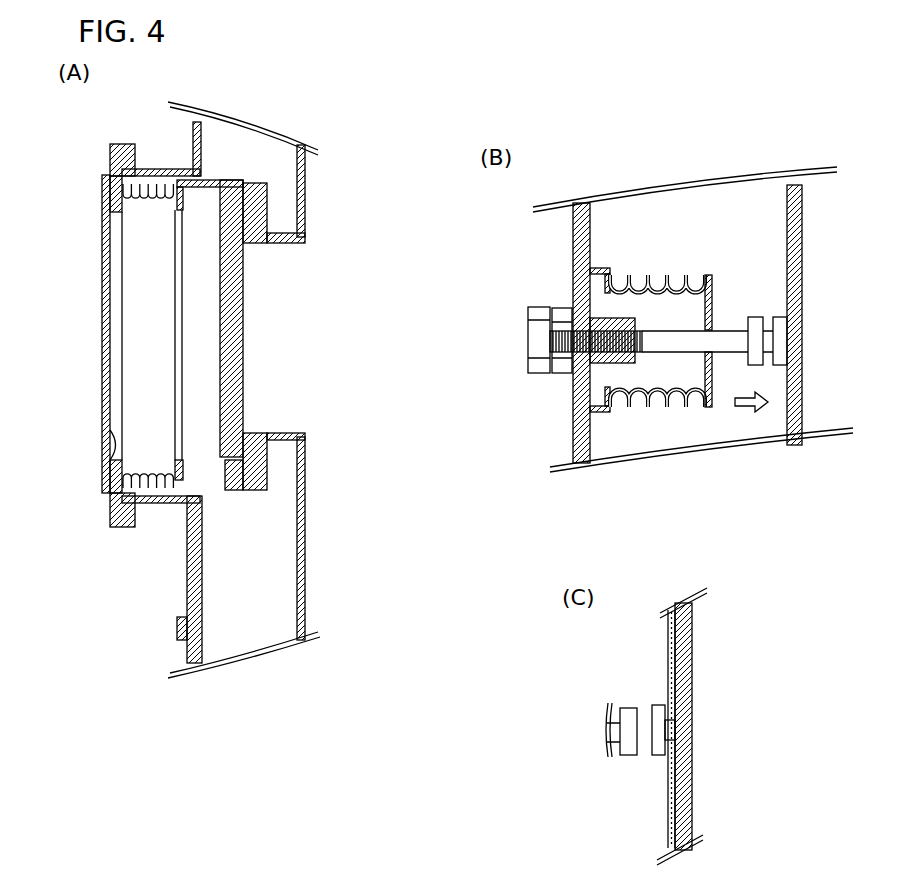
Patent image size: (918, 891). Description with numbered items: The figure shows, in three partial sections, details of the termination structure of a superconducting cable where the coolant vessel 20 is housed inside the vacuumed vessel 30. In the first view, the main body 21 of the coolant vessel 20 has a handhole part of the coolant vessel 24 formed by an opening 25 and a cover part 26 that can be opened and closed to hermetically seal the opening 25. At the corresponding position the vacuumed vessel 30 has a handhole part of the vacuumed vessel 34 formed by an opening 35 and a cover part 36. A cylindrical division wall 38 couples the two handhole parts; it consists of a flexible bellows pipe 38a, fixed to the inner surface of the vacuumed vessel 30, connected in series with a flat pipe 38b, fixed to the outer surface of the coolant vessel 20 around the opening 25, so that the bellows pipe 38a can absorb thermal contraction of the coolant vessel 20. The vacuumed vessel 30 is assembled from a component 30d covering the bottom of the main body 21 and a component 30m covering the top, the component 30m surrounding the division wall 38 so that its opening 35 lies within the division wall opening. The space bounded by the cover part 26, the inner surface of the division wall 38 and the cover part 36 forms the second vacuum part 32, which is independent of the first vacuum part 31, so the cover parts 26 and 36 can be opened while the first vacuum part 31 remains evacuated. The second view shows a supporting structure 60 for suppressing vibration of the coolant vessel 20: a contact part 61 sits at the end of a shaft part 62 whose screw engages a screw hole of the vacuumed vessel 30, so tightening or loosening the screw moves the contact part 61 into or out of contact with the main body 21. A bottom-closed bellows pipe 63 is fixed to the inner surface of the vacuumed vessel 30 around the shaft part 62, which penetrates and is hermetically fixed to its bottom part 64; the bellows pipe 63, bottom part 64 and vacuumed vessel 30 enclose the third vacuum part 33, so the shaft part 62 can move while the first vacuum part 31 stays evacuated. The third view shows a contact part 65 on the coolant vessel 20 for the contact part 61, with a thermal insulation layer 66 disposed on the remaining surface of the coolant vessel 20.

The coolant vessel 20 is at (525, 483).
The main body 21 is at (303, 503).
The handhole part of the coolant vessel 24 is at (286, 335).
The opening 25 is at (262, 432).
The cover part 26 is at (243, 300).
The vacuumed vessel 30 is at (573, 248).
The component of the vacuumed vessel 30m is at (168, 168).
The component of the vacuumed vessel 30d is at (187, 655).
The first vacuum part 31 is at (233, 152).
The second vacuum part 32 is at (150, 272).
The third vacuum part 33 is at (665, 380).
The handhole part of the vacuumed vessel 34 is at (65, 334).
The opening 35 is at (102, 437).
The cover part 36 is at (102, 388).
The division wall 38 is at (99, 333).
The bellows pipe 38a is at (150, 197).
The flat pipe 38b is at (178, 208).
The supporting structure 60 is at (624, 362).
The contact part 61 is at (762, 317).
The shaft part 62 is at (722, 332).
The bellows pipe 63 is at (680, 277).
The bottom part 64 is at (712, 300).
The contact part 65 is at (680, 700).
The thermal insulation layer 66 is at (668, 665).